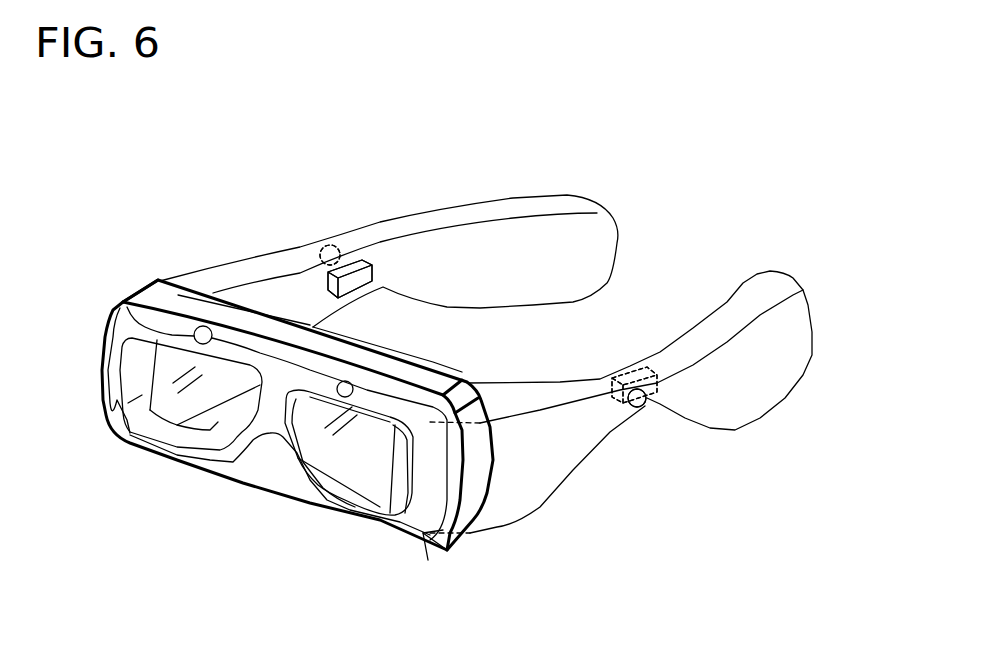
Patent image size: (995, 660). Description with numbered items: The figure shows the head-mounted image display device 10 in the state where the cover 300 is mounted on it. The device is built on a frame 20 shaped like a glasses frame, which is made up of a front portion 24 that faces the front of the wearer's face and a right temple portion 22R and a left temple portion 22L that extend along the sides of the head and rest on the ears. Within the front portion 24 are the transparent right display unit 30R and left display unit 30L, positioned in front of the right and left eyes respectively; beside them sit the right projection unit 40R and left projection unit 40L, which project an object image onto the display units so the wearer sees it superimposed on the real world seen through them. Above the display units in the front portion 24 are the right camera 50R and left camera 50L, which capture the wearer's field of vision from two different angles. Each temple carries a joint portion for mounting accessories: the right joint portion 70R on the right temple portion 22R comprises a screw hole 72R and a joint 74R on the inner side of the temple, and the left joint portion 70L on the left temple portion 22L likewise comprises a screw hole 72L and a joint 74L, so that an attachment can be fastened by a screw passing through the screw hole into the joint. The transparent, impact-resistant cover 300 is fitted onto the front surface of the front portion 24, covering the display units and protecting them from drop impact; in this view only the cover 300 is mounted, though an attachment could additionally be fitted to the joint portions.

The cover 300 is at (103, 333).
The image display device 10 is at (167, 270).
The frame 20 is at (183, 277).
The right temple portion 22R is at (560, 195).
The left temple portion 22L is at (757, 273).
The front portion 24 is at (428, 560).
The right display unit 30R is at (218, 420).
The left display unit 30L is at (340, 470).
The right projection unit 40R is at (125, 440).
The left projection unit 40L is at (402, 492).
The right camera 50R is at (188, 331).
The left camera 50L is at (353, 385).
The right joint portion 70R is at (334, 210).
The left joint portion 70L is at (647, 340).
The screw hole 72R is at (324, 246).
The screw hole 72L is at (640, 408).
The joint 74R is at (368, 260).
The joint 74L is at (612, 380).